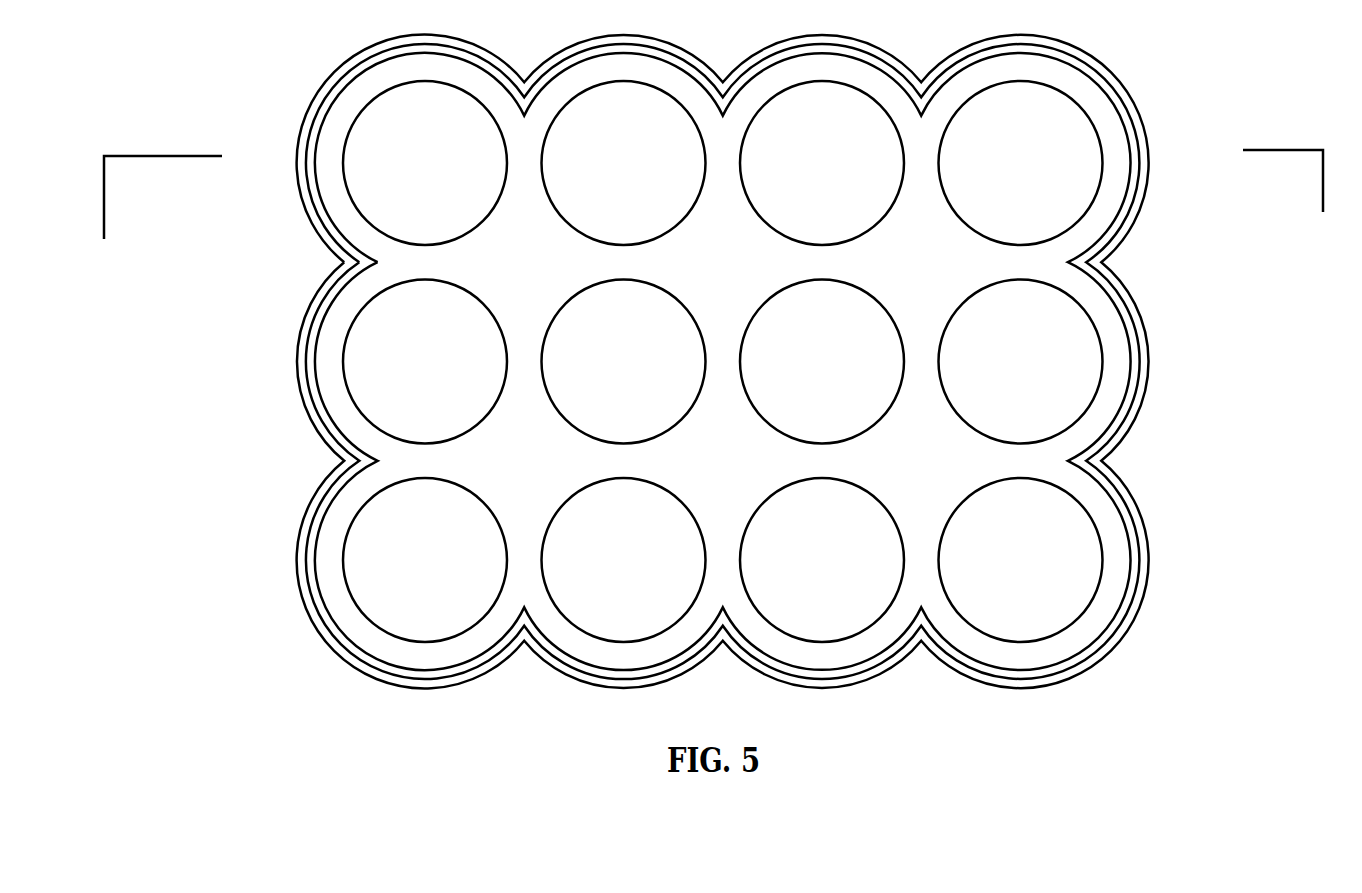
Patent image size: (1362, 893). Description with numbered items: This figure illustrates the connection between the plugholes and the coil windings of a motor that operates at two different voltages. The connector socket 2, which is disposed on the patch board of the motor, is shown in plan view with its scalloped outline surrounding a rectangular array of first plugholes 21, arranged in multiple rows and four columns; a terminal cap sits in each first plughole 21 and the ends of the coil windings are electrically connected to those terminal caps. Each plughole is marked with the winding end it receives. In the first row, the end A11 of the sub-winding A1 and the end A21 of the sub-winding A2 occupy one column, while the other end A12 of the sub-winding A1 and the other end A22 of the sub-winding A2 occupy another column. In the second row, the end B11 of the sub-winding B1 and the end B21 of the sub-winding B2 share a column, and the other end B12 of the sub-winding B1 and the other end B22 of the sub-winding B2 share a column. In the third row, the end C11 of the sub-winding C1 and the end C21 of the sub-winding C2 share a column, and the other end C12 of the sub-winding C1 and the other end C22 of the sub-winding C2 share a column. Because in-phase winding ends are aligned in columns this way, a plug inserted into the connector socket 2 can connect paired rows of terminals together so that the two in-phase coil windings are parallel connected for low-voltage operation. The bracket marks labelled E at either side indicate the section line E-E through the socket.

The connector socket 2 is at (1140, 194).
The first plughole 21 is at (1132, 258).
The end of sub-winding A1 A11 is at (425, 163).
The end of sub-winding A2 A21 is at (624, 163).
The other end of sub-winding A1 A12 is at (822, 163).
The other end of sub-winding A2 A22 is at (1021, 163).
The end of sub-winding B1 B11 is at (425, 362).
The end of sub-winding B2 B21 is at (624, 362).
The other end of sub-winding B1 B12 is at (822, 362).
The other end of sub-winding B2 B22 is at (1021, 362).
The end of sub-winding C1 C11 is at (425, 560).
The end of sub-winding C2 C21 is at (624, 560).
The other end of sub-winding C1 C12 is at (822, 560).
The other end of sub-winding C2 C22 is at (1021, 560).
The section line E- E is at (720, 230).